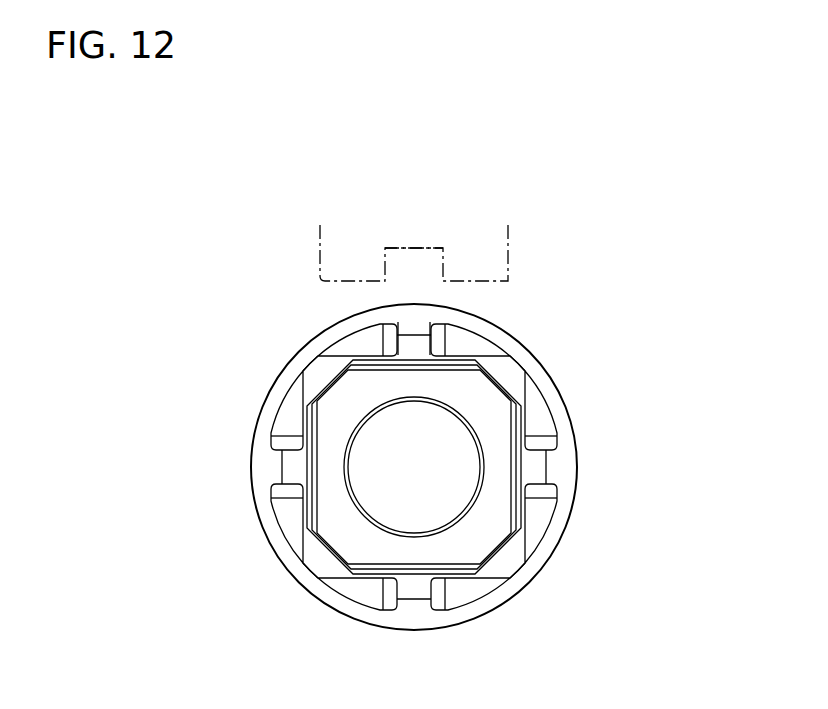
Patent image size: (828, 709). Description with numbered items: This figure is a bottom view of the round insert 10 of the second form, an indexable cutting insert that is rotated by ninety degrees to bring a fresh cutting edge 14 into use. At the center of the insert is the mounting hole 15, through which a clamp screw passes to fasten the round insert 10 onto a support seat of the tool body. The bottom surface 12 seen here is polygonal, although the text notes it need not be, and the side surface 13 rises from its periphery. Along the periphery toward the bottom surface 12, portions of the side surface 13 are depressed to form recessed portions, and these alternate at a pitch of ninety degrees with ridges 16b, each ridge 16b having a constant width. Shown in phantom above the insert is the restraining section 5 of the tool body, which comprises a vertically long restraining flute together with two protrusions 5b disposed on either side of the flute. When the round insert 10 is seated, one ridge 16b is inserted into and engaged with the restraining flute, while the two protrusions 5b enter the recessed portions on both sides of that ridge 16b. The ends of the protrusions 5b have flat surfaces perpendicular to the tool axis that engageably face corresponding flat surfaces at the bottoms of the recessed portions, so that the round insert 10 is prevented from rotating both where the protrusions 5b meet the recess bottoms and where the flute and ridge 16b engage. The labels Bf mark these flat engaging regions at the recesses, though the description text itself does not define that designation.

The restraining section 5 is at (572, 165).
The protrusions 5b is at (347, 267).
The round insert 10 is at (580, 404).
The bottom surface 12 is at (480, 525).
The side surface 13 is at (567, 492).
The cutting edge 14 is at (248, 445).
The mounting hole 15 is at (378, 494).
The ridge 16b is at (414, 345).
The flat engaging portions Bf is at (367, 352).